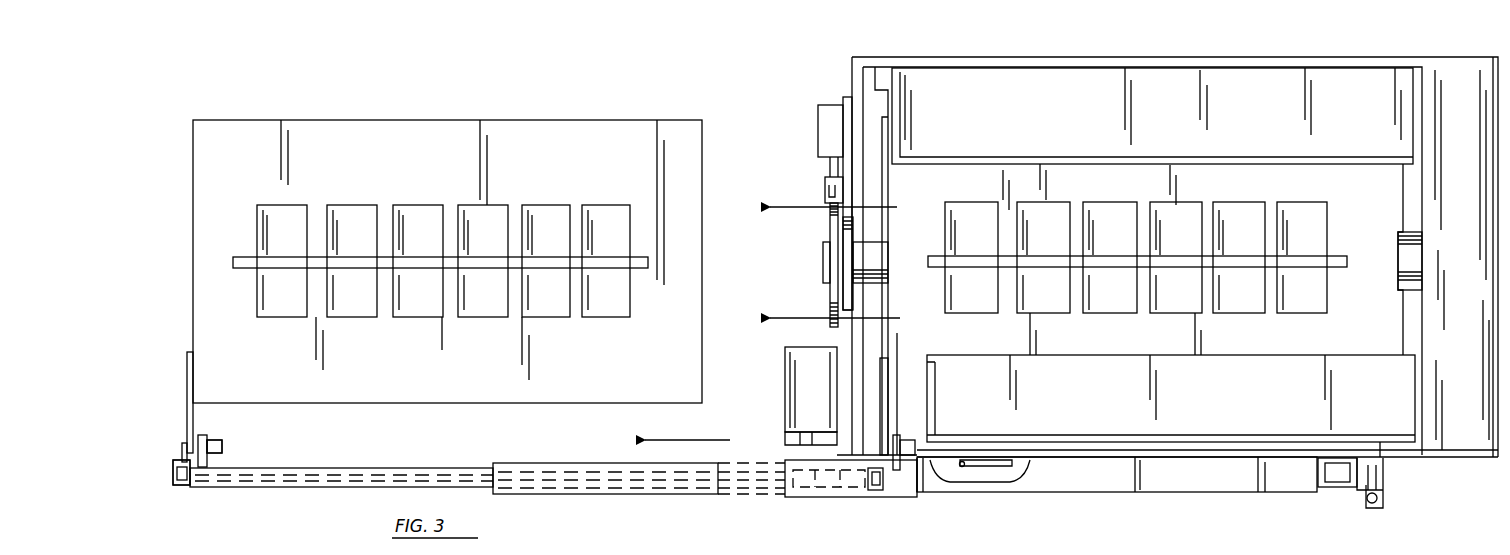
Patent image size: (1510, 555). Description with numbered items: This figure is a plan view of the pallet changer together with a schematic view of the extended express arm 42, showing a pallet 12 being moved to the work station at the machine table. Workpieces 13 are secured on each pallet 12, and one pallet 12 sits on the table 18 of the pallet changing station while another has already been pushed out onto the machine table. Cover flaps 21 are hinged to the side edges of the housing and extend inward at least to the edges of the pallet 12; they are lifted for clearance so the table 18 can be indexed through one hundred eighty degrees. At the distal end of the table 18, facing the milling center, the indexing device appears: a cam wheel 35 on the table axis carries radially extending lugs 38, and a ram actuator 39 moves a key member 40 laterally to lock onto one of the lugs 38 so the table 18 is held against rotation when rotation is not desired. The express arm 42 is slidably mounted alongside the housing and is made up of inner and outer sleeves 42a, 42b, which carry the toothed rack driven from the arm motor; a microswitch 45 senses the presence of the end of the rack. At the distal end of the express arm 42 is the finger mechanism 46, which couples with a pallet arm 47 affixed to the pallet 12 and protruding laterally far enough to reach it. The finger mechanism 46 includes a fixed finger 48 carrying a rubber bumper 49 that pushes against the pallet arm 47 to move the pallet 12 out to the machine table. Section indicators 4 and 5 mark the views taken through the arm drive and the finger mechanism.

The section line 4- 4 is at (790, 517).
The section line 5- 5 is at (1072, 537).
The pallet 12 is at (598, 372).
The workpiece 13 is at (555, 210).
The table 18 is at (656, 125).
The cover flap 21 is at (1210, 132).
The cam wheel 35 is at (823, 268).
The lug 38 is at (823, 232).
The ram actuator 39 is at (818, 128).
The key member 40 is at (825, 182).
The express arm 42 is at (1183, 490).
The inner sleeve 42a is at (390, 470).
The outer sleeve 42b is at (630, 495).
The microswitch 45 is at (178, 450).
The finger mechanism 46 is at (182, 487).
The pallet arm 47 is at (185, 370).
The fixed finger 48 is at (207, 437).
The rubber bumper 49 is at (222, 447).